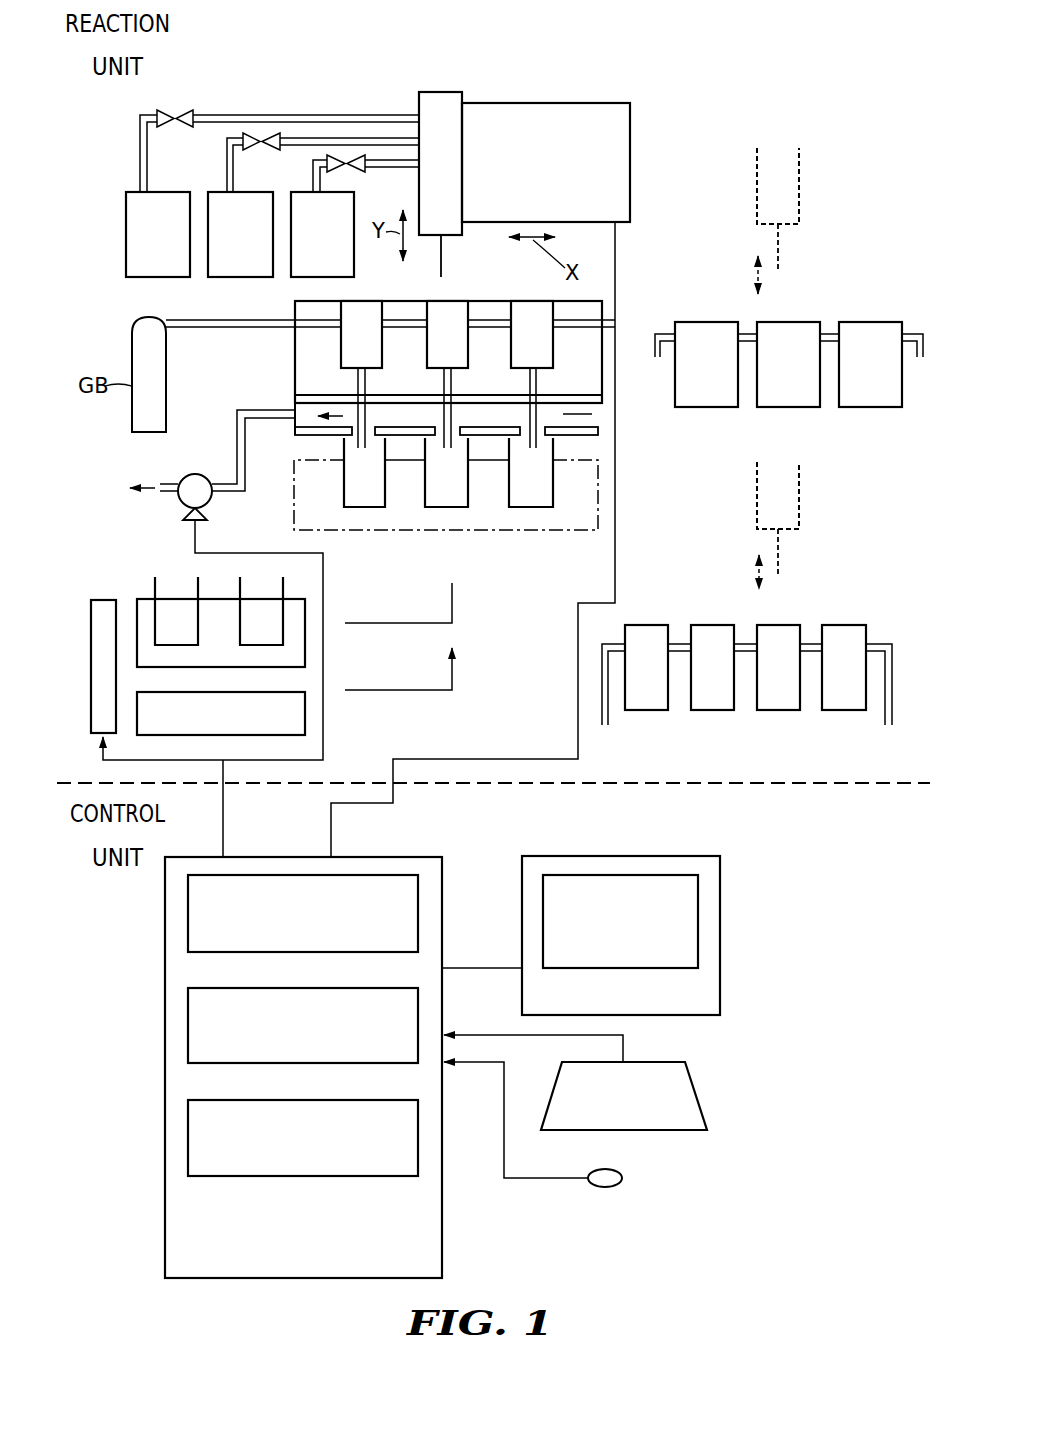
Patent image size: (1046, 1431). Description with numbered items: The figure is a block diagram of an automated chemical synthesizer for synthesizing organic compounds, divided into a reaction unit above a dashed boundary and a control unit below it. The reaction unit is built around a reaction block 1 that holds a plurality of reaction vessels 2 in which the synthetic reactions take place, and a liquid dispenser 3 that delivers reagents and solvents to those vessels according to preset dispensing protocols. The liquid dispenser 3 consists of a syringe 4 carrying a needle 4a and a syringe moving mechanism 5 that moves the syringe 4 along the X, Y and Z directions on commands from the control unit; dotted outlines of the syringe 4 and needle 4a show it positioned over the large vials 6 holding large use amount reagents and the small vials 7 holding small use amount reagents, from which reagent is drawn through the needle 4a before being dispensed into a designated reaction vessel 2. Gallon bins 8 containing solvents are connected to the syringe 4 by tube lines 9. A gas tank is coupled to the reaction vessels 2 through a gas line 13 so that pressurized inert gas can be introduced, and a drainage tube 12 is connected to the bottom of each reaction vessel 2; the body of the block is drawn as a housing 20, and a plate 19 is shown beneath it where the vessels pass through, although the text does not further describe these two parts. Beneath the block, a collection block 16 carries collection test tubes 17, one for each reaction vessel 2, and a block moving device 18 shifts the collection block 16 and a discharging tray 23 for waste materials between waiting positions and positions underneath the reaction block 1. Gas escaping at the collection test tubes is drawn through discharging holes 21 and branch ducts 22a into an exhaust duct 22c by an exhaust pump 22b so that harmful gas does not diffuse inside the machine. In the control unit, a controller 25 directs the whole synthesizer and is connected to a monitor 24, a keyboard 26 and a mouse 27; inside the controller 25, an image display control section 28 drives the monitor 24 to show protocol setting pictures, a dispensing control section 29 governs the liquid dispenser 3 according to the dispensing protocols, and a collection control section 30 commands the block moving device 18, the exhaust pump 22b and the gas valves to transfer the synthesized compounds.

The reaction block 1 is at (408, 294).
The reaction vessels 2 is at (372, 303).
The liquid dispenser 3 is at (640, 104).
The syringe 4 is at (419, 184).
The needle 4a is at (441, 251).
The syringe moving mechanism 5 is at (632, 178).
The large vials 6 is at (797, 322).
The small vials 7 is at (648, 710).
The gallon bins 8 is at (126, 241).
The tube lines 9 is at (247, 114).
The drainage tubes 12 is at (363, 450).
The gas line 13 is at (255, 329).
The collection block 16 is at (487, 531).
The collection test tubes 17 is at (365, 508).
The block moving device 18 is at (102, 600).
The holding plate 19 is at (310, 438).
The reaction block 20 is at (483, 395).
The discharging holes 21 is at (400, 410).
The branch ducts 22a is at (245, 409).
The exhaust pump 22b is at (194, 476).
The exhaust duct 22c is at (221, 491).
The discharging tray 23 is at (305, 712).
The monitor 24 is at (722, 942).
The controller 25 is at (443, 889).
The keyboard 26 is at (695, 1095).
The mouse 27 is at (622, 1180).
The image display control section 28 is at (188, 1141).
The dispensing control section 29 is at (188, 913).
The collection control section 30 is at (188, 1031).